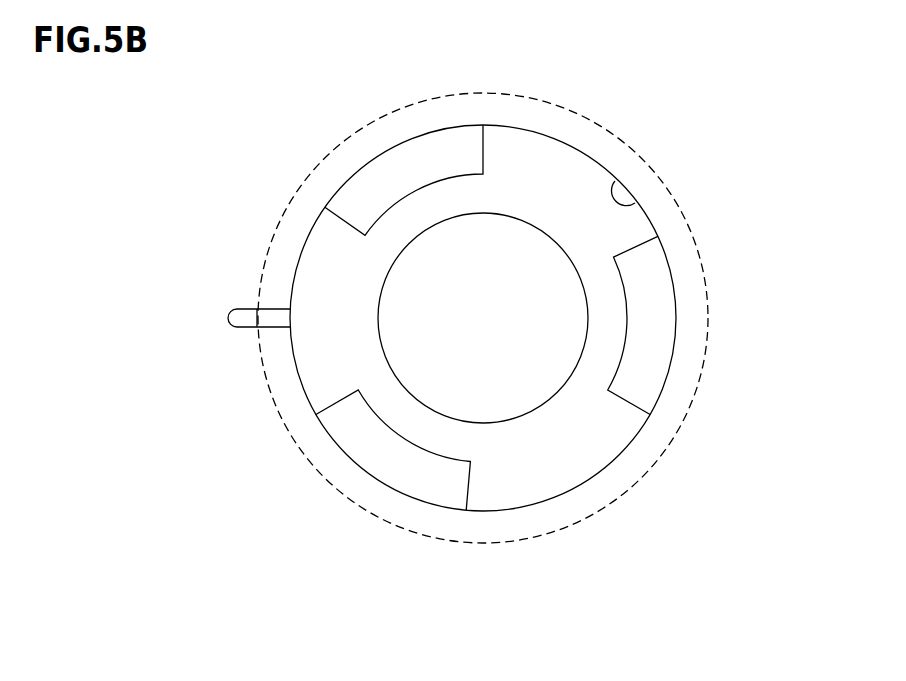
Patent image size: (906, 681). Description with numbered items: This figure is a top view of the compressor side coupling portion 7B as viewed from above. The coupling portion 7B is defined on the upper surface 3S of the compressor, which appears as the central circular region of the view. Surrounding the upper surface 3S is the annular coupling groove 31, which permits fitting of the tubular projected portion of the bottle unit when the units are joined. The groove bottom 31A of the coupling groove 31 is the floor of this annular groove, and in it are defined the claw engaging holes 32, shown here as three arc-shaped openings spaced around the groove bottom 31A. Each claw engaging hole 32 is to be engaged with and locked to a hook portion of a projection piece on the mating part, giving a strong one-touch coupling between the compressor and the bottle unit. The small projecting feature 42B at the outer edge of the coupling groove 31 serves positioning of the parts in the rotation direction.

The rotor core 7B is at (640, 120).
The groove bottom 31A is at (540, 173).
The coupling groove 31 is at (637, 207).
The claw engaging hole 32 is at (625, 400).
The key 42B is at (228, 318).
The upper surface 3S is at (493, 331).